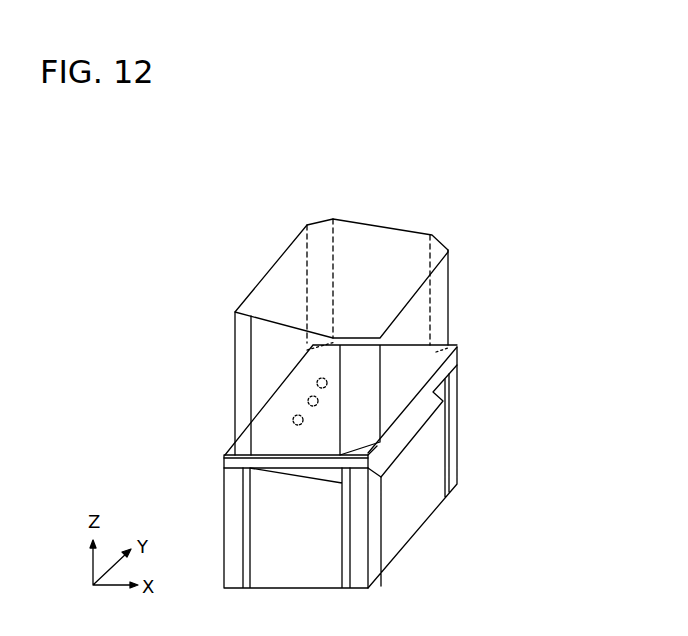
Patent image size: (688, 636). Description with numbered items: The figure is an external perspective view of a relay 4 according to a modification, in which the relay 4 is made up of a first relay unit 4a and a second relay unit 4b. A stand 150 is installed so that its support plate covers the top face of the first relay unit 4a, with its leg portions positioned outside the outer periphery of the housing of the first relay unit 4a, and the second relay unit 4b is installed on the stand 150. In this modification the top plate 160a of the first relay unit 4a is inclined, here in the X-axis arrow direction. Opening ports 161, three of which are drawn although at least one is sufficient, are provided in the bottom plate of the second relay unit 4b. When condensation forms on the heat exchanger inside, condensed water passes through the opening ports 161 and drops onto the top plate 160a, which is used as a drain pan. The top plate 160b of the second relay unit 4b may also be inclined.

The relay 4 is at (522, 272).
The first relay unit 4a is at (342, 466).
The second relay unit 4b is at (376, 328).
The stand 150 is at (225, 458).
The top plate 160a is at (415, 447).
The top plate 160b is at (403, 237).
The opening ports 161 is at (293, 420).